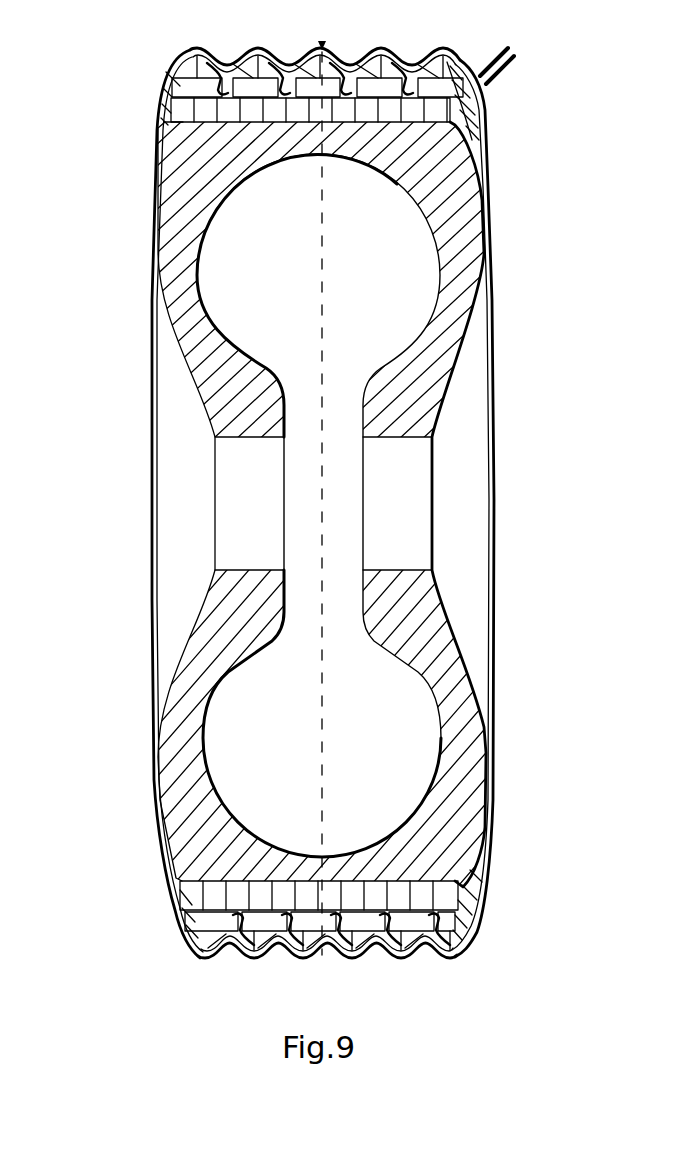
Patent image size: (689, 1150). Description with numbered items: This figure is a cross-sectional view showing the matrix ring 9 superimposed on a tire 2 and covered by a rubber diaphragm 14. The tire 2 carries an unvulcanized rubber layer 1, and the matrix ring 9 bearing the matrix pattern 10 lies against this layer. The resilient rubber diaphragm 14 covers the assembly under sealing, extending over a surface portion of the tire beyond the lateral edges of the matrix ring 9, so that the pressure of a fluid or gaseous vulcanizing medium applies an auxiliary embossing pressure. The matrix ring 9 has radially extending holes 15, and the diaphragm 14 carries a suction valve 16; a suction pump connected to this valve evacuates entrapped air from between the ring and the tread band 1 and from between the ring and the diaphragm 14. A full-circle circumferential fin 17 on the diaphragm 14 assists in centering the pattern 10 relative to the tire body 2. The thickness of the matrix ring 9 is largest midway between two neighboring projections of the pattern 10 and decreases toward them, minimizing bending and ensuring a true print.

The unvulcanized rubber layer 1 is at (477, 133).
The tire 2 is at (453, 207).
The matrix ring 9 is at (463, 102).
The matrix pattern 10 is at (406, 92).
The rubber diaphragm 14 is at (478, 125).
The radially extending holes 15 is at (338, 934).
The suction valve 16 is at (511, 70).
The circumferential fin 17 is at (324, 46).